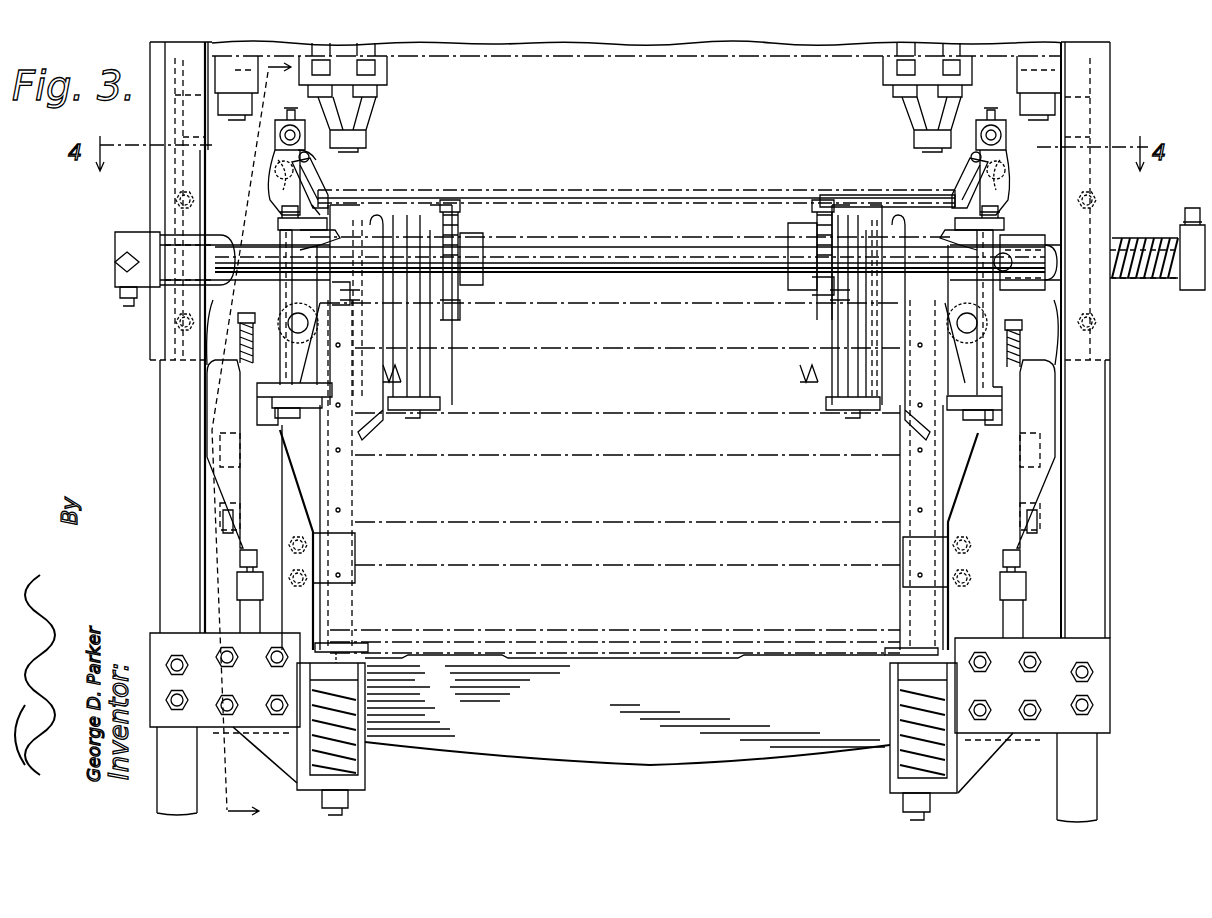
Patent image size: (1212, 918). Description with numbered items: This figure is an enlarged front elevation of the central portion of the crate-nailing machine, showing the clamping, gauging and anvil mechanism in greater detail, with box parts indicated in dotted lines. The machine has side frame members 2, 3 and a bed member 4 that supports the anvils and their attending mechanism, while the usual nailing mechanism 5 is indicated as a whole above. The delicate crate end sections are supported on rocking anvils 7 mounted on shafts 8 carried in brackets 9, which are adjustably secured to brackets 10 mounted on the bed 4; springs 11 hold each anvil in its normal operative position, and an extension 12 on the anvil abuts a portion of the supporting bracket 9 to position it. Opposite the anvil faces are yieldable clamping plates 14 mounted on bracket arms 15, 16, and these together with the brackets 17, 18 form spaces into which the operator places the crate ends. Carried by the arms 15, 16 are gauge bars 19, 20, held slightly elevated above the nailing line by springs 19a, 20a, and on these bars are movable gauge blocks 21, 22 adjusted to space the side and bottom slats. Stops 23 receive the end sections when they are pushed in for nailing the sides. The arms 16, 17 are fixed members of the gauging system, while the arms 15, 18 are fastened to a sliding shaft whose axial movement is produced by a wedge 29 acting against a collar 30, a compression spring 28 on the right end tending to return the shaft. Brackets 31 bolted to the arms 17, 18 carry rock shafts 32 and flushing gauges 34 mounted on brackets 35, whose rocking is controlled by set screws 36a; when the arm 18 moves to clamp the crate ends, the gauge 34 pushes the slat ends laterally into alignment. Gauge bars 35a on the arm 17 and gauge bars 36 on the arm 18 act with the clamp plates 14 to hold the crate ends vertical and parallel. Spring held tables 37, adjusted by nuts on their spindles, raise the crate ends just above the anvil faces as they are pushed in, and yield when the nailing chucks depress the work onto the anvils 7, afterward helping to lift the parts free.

The side frame member 2 is at (181, 428).
The side frame member 3 is at (1083, 432).
The bed member 4 is at (627, 710).
The nailing mechanism 5 is at (248, 443).
The rocking anvil 7 is at (310, 307).
The shaft 8 is at (308, 326).
The bracket 9 is at (235, 466).
The bracket 10 is at (316, 475).
The spring 11 is at (240, 350).
The anvil extension 12 is at (294, 364).
The clamping plate 14 is at (383, 430).
The bracket arm 15 is at (437, 380).
The bracket arm 16 is at (822, 366).
The bracket 17 is at (276, 224).
The bracket 18 is at (1005, 250).
The gauge bar 19 is at (458, 208).
The spring 19a is at (483, 232).
The gauge bar 20 is at (832, 208).
The spring 20a is at (788, 228).
The gauge block 21 is at (450, 200).
The gauge block 22 is at (832, 200).
The stop 23 is at (340, 552).
The compression spring 28 is at (1148, 285).
The wedge 29 is at (152, 182).
The collar 30 is at (152, 298).
The bracket 31 is at (283, 184).
The rock shaft 32 is at (278, 135).
The flushing gauge 34 is at (322, 202).
The bracket 35 is at (312, 150).
The gauge bar 35a is at (330, 205).
The gauge bar 36 is at (998, 222).
The set screw 36a is at (276, 166).
The spring held table 37 is at (348, 645).